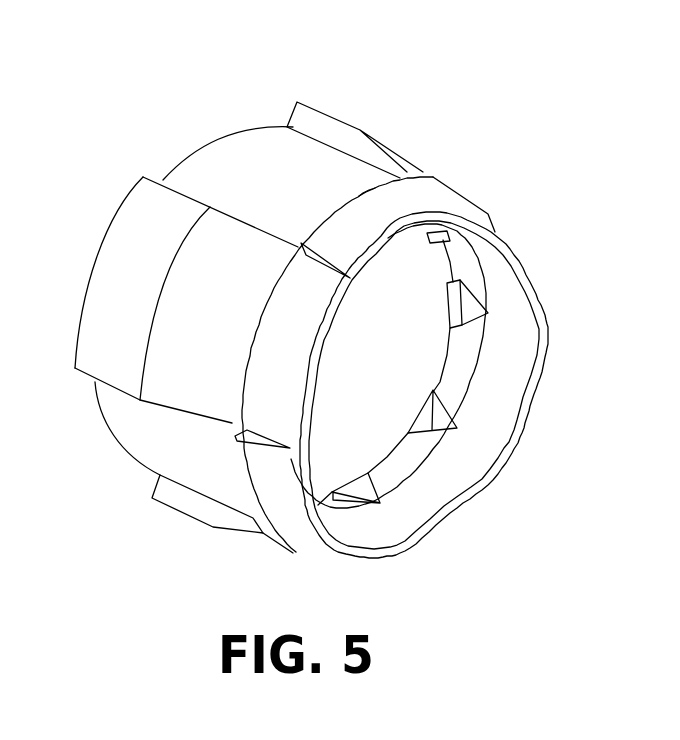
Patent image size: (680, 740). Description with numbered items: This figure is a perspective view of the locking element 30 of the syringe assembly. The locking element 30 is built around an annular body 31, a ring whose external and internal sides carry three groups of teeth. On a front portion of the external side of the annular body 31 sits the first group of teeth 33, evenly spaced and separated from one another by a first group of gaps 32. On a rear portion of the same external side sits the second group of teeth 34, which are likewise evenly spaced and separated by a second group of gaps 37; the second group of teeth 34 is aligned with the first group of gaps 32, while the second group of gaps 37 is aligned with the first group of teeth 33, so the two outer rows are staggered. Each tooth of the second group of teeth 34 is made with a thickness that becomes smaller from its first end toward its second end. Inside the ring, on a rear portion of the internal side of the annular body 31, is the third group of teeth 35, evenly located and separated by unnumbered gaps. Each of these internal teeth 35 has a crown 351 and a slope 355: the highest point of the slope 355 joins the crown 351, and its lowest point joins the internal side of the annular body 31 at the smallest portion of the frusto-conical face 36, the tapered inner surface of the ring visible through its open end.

The locking element 30 is at (331, 323).
The annular body 31 is at (540, 345).
The first group of gaps 32 is at (253, 165).
The first group of teeth 33 is at (343, 116).
The second group of teeth 34 is at (461, 186).
The third group of teeth 35 is at (495, 378).
The crown 351 is at (457, 291).
The slope 355 is at (473, 313).
The frusto-conical face 36 is at (507, 396).
The second group of gaps 37 is at (292, 341).